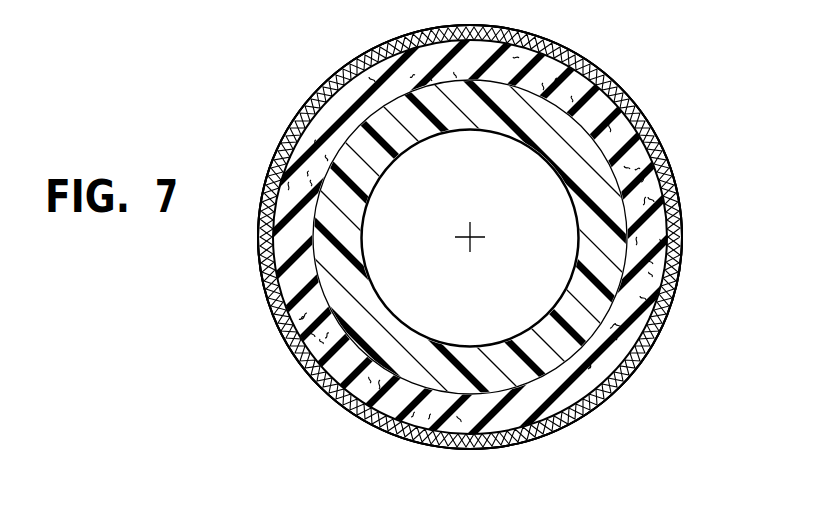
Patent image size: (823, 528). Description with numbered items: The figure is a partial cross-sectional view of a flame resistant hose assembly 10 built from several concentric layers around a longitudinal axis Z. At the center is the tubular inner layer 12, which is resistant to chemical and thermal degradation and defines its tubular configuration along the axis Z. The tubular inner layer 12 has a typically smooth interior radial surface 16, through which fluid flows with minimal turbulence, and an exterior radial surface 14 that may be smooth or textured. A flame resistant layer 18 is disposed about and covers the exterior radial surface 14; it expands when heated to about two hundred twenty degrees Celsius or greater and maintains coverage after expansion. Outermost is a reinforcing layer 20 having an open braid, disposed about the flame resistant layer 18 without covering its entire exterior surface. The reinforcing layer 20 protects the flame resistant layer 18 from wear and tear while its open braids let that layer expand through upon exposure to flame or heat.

The hose assembly 10 is at (271, 75).
The tubular inner layer 12 is at (552, 430).
The exterior radial surface 14 is at (632, 227).
The interior radial surface 16 is at (361, 238).
The flame resistant layer 18 is at (655, 340).
The reinforcing layer 20 is at (587, 54).
The axis Z is at (476, 233).